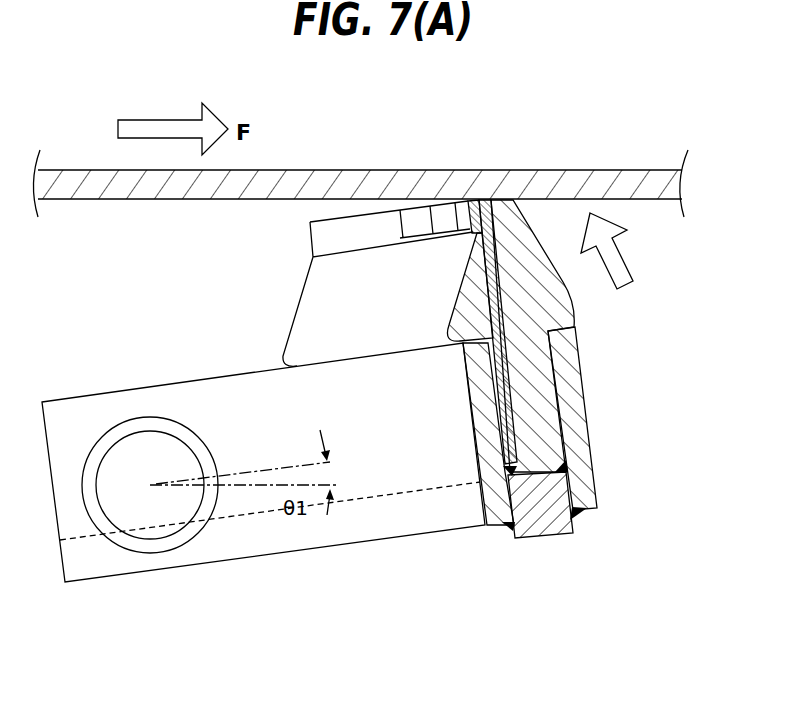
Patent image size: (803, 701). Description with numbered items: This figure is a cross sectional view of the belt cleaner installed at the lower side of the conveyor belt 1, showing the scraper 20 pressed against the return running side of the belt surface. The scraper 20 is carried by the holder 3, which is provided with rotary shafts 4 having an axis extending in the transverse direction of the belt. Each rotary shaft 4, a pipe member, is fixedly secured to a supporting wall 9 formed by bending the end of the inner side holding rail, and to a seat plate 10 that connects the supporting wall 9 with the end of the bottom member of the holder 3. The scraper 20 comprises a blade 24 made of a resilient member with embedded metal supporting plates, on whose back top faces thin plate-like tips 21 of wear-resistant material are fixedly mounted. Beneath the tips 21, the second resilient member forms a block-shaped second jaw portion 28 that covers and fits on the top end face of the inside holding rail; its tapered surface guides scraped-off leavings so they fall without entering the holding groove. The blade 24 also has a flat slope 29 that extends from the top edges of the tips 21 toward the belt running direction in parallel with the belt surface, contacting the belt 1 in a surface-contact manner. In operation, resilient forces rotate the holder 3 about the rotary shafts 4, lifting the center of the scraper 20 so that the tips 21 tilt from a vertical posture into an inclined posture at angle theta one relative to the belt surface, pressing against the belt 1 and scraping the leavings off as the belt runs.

The conveyor belt 1 is at (537, 166).
The holder 3 is at (598, 428).
The rotary shaft 4 is at (190, 427).
The supporting wall 9 is at (127, 387).
The seat plate 10 is at (182, 557).
The scraper 20 is at (597, 336).
The blade 24 is at (582, 309).
The tip 21 is at (470, 200).
The second jaw portion 28 is at (458, 302).
The flat slope 29 is at (488, 188).